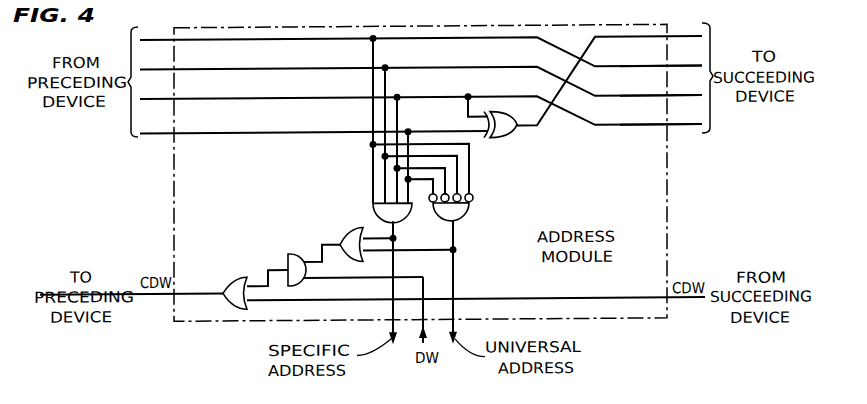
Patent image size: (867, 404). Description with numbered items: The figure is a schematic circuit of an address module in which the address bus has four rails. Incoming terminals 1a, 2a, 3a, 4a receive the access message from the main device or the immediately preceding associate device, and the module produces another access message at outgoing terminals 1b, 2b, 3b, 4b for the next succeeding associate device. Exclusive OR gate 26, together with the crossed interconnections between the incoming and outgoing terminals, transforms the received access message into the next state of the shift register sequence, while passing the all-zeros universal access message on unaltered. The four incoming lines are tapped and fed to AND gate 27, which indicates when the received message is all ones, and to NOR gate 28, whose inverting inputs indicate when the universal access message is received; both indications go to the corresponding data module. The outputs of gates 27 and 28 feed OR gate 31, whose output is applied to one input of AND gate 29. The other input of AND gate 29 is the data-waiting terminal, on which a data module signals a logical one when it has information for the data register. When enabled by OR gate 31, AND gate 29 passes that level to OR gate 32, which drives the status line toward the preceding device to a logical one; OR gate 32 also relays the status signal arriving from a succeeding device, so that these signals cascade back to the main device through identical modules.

The incoming terminal 1a is at (421, 43).
The incoming terminal 2a is at (421, 73).
The incoming terminal 3a is at (421, 102).
The incoming terminal 4a is at (314, 123).
The outgoing terminal 1b is at (609, 72).
The outgoing terminal 2b is at (661, 57).
The outgoing terminal 3b is at (661, 86).
The outgoing terminal 4b is at (661, 115).
The exclusive OR gate 26 is at (505, 141).
The AND gate 27 is at (375, 213).
The NOR gate 28 is at (471, 213).
The AND gate 29 is at (298, 257).
The OR gate 31 is at (347, 234).
The OR gate 32 is at (238, 280).